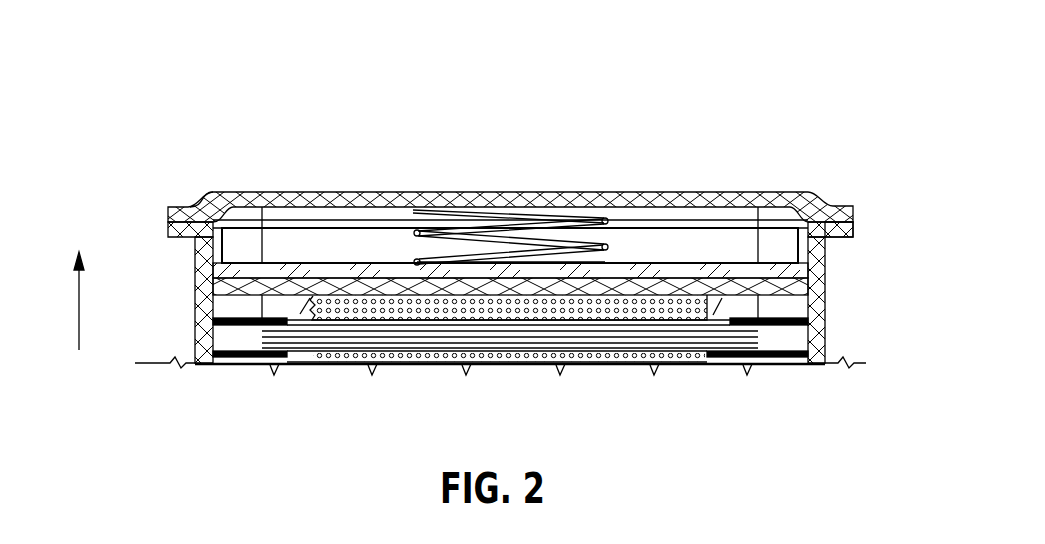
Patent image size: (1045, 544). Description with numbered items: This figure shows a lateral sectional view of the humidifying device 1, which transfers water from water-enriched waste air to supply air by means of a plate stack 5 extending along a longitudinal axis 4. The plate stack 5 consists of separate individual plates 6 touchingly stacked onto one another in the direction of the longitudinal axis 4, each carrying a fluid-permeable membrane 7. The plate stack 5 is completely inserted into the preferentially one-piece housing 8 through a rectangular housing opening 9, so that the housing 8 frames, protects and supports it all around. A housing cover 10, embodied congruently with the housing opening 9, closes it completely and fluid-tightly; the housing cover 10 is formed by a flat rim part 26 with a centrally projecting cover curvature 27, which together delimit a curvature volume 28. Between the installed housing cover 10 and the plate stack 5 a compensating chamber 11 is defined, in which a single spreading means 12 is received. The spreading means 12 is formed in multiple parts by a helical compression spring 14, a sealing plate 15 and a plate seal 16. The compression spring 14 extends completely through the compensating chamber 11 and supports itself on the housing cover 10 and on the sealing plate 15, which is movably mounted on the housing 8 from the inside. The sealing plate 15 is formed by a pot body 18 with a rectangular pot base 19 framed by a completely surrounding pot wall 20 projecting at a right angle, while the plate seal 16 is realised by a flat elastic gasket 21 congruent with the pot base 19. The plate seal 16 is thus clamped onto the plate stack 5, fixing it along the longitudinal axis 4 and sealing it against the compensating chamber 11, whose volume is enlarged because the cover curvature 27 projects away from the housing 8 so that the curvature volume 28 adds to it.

The humidifying device 1 is at (820, 128).
The longitudinal axis 4 is at (75, 308).
The plate stack 5 is at (510, 376).
The individual plates 6 is at (230, 356).
The fluid-permeable membrane 7 is at (392, 342).
The housing 8 is at (810, 278).
The housing opening 9 is at (233, 218).
The housing cover 10 is at (510, 170).
The compensating chamber 11 is at (340, 258).
The spreading means 12 is at (510, 203).
The helical compression spring 14 is at (447, 235).
The sealing plate 15 is at (810, 250).
The plate seal 16 is at (568, 305).
The pot body 18 is at (471, 293).
The pot base 19 is at (197, 288).
The pot wall 20 is at (195, 246).
The flat elastic gasket 21 is at (810, 304).
The flat rim part 26 is at (316, 192).
The cover curvature 27 is at (652, 200).
The curvature volume 28 is at (733, 213).